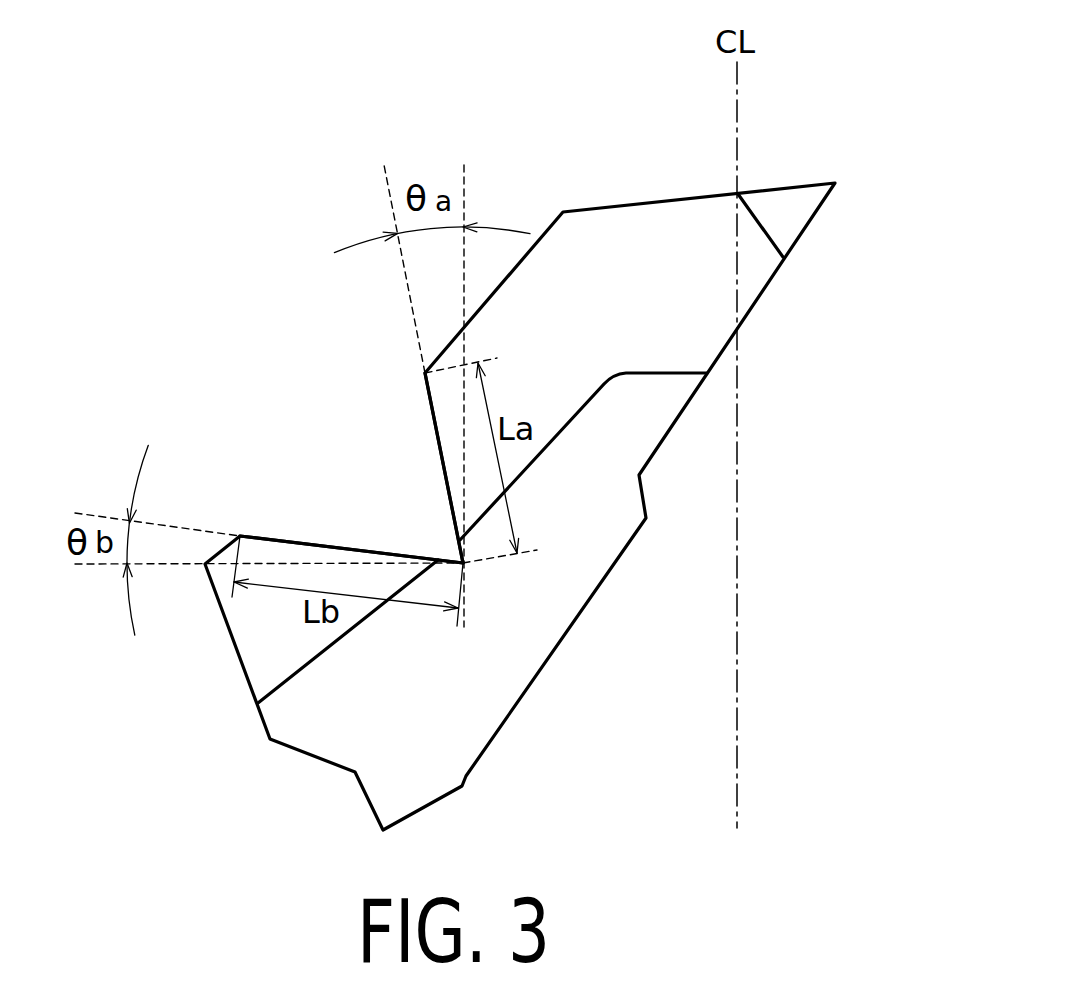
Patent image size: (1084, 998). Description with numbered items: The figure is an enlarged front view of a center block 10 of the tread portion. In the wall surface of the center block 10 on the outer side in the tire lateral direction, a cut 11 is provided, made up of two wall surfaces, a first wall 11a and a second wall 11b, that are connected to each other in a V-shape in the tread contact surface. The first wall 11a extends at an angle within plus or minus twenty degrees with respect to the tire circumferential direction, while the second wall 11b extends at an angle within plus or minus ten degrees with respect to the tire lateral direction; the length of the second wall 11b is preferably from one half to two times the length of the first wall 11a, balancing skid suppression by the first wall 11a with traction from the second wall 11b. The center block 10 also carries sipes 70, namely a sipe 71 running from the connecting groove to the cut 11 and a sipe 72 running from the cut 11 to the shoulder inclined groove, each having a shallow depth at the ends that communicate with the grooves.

The center block 10 is at (648, 217).
The cut 11 is at (344, 461).
The first wall 11a is at (441, 457).
The second wall 11b is at (362, 478).
The sipe 70 is at (469, 601).
The sipe 71 is at (500, 497).
The sipe 72 is at (324, 656).